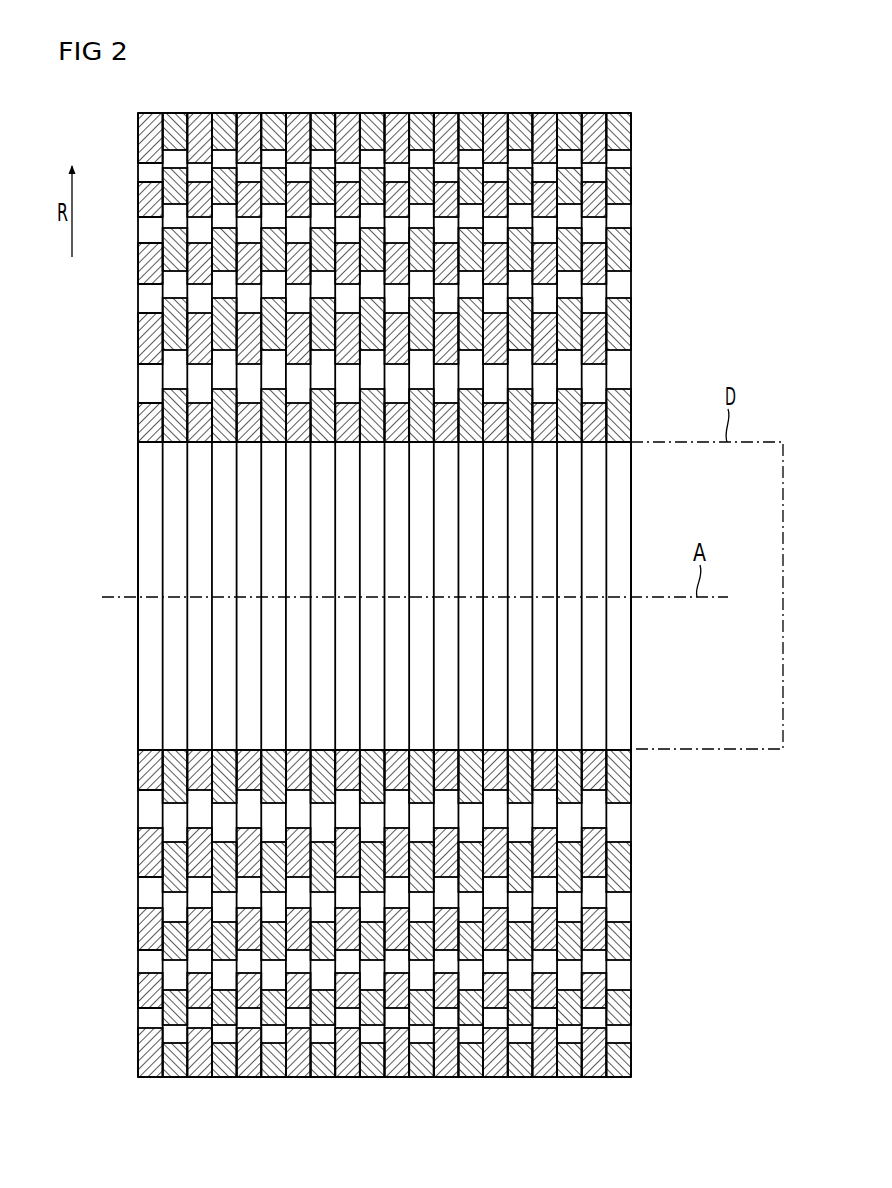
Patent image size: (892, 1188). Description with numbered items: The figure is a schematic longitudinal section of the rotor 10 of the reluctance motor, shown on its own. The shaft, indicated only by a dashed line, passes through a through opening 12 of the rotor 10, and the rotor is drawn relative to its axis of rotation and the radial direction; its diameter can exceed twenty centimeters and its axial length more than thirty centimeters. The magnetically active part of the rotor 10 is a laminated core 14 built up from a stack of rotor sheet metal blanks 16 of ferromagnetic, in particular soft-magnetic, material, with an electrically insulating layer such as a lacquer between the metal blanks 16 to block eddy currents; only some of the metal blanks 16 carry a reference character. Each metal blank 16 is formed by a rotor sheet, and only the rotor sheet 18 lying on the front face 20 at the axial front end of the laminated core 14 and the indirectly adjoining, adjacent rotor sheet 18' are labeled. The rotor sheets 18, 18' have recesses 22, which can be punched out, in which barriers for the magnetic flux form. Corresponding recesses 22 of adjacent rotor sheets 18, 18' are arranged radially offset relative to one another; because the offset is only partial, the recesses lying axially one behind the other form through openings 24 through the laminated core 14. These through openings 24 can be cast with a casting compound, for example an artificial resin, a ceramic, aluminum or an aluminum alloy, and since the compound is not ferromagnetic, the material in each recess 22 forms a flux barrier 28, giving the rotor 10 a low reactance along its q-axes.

The rotor 10 is at (399, 67).
The through opening 12 is at (136, 553).
The laminated core 14 is at (138, 113).
The metal blanks 16 is at (148, 1078).
The rotor sheet 18 is at (150, 252).
The adjacent rotor sheet 18' is at (178, 252).
The front face 20 is at (98, 881).
The recesses 22 is at (137, 168).
The through openings 24 is at (639, 158).
The flux barrier 28 is at (145, 178).